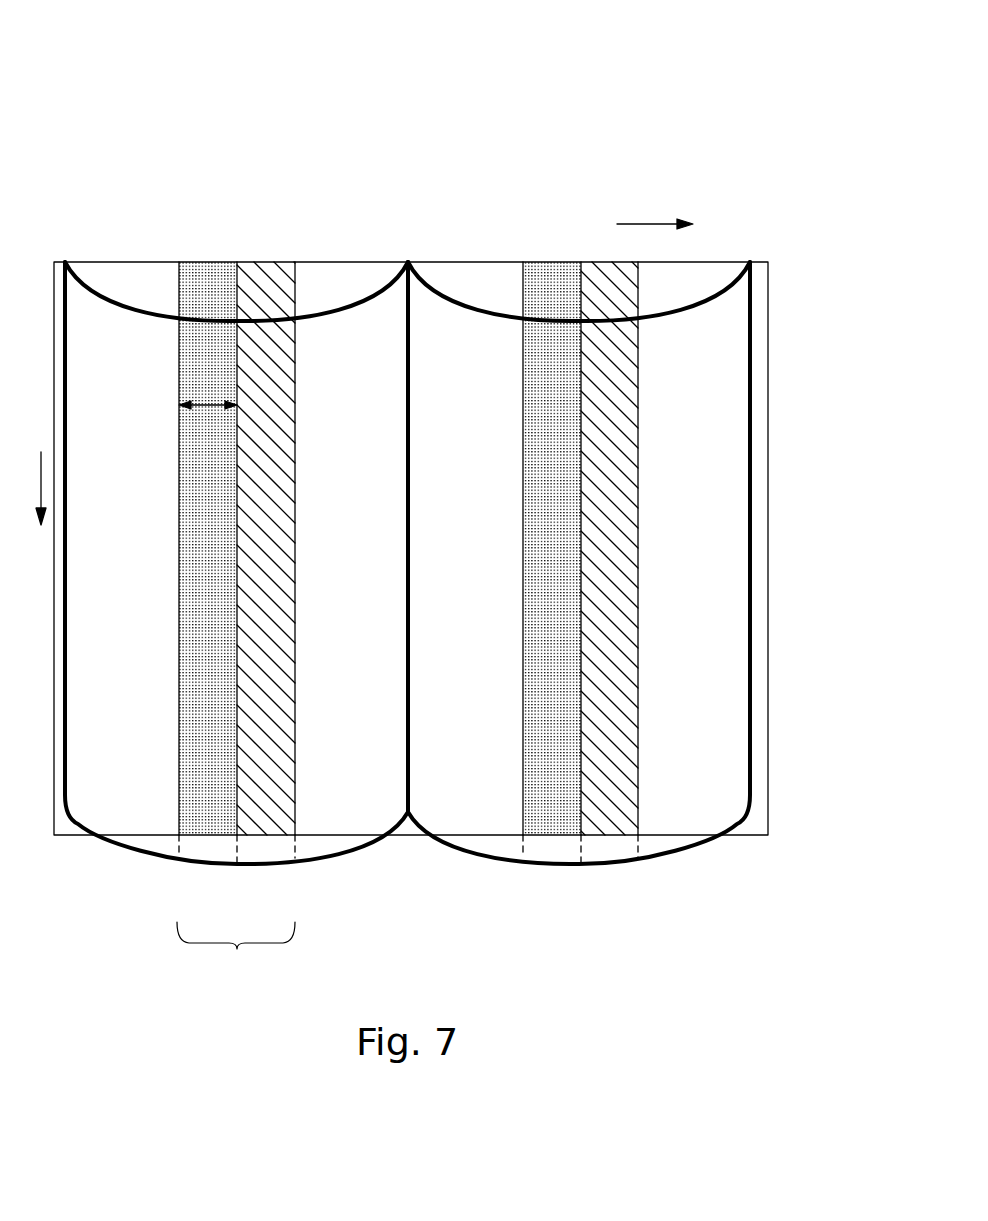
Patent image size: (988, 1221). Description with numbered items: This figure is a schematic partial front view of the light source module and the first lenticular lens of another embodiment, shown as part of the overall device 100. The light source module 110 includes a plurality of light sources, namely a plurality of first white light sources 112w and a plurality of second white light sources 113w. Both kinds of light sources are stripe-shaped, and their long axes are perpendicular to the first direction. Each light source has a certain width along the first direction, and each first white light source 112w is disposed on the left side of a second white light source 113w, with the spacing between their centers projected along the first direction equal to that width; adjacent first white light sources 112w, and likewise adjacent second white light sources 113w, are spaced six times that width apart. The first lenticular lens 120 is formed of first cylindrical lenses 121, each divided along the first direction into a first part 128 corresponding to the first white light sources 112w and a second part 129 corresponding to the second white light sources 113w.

The display device 100 is at (89, 44).
The light source module 110 is at (114, 262).
The first white light source 112w is at (210, 268).
The second white light source 113w is at (268, 270).
The curved light emitting pattern 120 is at (125, 855).
The first part 128 is at (213, 850).
The second part 129 is at (263, 850).
The first cylindrical lens 121 is at (236, 952).